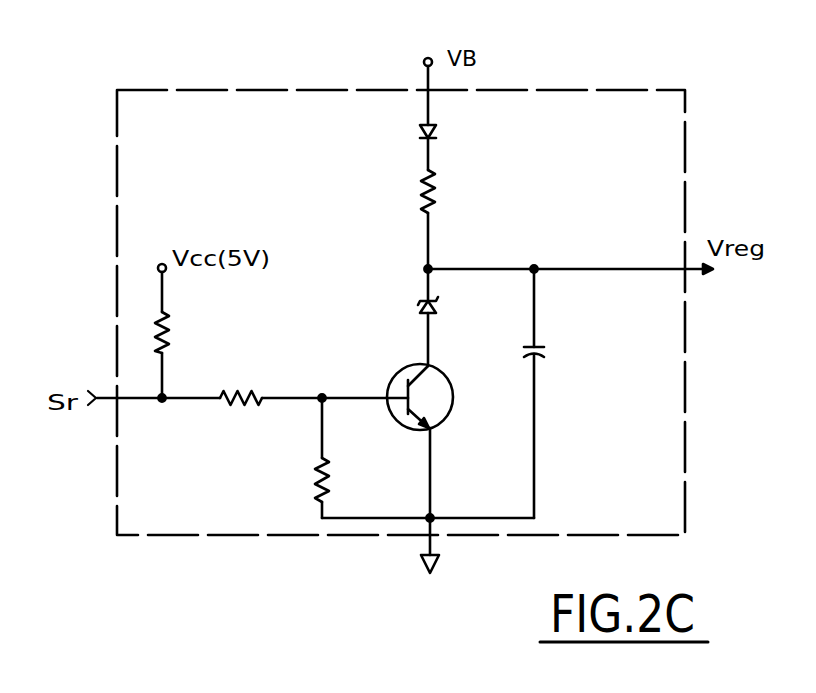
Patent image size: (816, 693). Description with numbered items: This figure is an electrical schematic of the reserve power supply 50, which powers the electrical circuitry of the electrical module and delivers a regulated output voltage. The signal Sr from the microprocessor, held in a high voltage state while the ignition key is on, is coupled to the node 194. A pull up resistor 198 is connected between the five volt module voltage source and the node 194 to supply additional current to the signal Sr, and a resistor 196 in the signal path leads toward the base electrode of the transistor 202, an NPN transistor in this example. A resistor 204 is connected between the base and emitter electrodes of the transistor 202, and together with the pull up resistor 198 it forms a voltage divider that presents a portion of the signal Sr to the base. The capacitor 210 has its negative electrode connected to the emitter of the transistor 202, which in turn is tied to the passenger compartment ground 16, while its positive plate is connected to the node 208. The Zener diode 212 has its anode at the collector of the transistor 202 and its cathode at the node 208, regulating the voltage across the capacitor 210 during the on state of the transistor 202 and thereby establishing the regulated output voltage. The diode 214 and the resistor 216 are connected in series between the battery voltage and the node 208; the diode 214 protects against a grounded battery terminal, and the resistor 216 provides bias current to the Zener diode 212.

The passenger compartment ground 16 is at (425, 561).
The reserve power supply 50 is at (556, 90).
The node 194 is at (160, 406).
The resistor 196 is at (246, 392).
The pull up resistor 198 is at (170, 326).
The transistor 202 is at (454, 394).
The resistor 204 is at (312, 477).
The node 208 is at (426, 268).
The capacitor 210 is at (546, 345).
The Zener diode 212 is at (418, 310).
The diode 214 is at (438, 127).
The resistor 216 is at (421, 185).